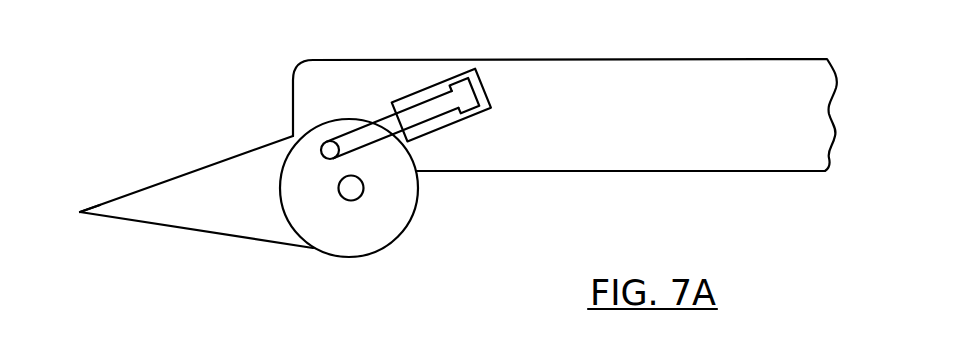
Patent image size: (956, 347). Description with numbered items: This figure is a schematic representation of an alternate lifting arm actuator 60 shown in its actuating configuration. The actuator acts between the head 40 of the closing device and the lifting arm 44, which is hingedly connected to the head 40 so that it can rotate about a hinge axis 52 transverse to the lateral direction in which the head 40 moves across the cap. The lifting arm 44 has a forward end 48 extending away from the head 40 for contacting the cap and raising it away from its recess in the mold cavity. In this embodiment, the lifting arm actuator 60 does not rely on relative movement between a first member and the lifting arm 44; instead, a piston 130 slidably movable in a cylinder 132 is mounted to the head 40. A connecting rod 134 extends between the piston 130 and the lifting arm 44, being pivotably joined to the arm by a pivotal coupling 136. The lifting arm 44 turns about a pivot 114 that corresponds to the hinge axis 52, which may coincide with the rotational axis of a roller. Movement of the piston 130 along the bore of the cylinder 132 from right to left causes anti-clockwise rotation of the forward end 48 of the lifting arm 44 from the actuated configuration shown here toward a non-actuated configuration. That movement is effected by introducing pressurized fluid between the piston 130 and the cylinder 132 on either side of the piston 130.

The head 40 is at (669, 114).
The lifting arm 44 is at (203, 195).
The forward end 48 is at (80, 212).
The hinge axis 52 is at (351, 190).
The pivot 114 is at (394, 188).
The piston 130 is at (446, 91).
The cylinder 132 is at (458, 115).
The connecting rod 134 is at (423, 111).
The pivotal coupling 136 is at (327, 142).
The lifting arm actuator 60 is at (595, 185).